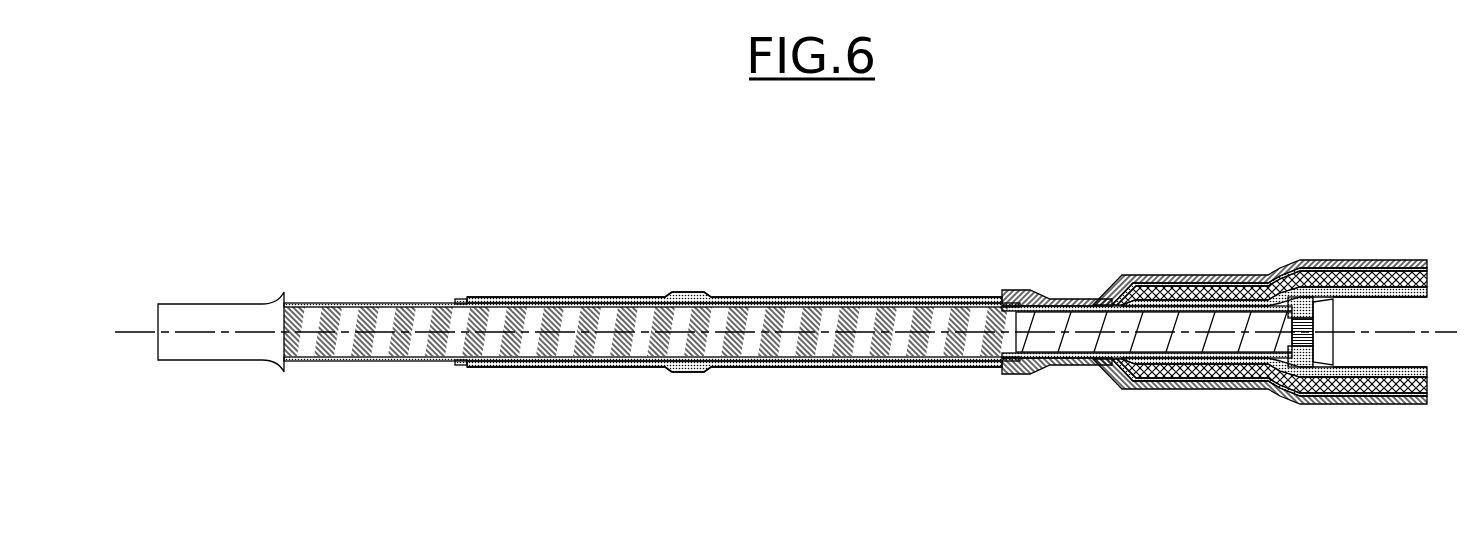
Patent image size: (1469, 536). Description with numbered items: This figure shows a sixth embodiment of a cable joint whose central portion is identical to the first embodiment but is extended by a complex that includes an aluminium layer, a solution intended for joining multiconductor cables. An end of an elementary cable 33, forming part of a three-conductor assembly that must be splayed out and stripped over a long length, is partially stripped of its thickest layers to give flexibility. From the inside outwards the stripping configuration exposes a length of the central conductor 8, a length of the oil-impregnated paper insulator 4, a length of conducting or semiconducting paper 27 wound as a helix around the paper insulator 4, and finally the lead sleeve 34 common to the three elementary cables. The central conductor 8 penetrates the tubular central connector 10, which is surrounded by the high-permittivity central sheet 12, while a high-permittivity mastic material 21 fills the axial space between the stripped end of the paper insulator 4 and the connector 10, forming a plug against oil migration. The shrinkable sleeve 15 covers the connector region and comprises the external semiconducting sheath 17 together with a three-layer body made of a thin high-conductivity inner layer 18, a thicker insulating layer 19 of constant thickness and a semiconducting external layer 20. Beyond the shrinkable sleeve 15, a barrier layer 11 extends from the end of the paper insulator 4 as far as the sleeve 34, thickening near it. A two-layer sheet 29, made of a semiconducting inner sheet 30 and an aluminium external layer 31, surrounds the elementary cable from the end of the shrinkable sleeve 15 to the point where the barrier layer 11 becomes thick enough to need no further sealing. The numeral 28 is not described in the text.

The paper insulator 4 is at (1215, 343).
The central conductor 8 is at (1302, 406).
The central connector 10 is at (1370, 358).
The barrier layer 11 is at (648, 313).
The central sheet 12 is at (1265, 321).
The shrinkable sleeve 15 is at (1265, 304).
The external semiconducting sheath 17 is at (1013, 290).
The innermost layer of high conductivity 18 is at (1357, 261).
The insulating central layer 19 is at (1400, 261).
The semiconducting external layer 20 is at (1422, 261).
The high-permittivity mastic material 21 is at (1302, 258).
The conducting or semiconducting paper 27 is at (903, 363).
The braided tube 28 is at (360, 304).
The two-layer sheet 29 is at (505, 295).
The semiconducting inner sheet 30 is at (460, 299).
The aluminium external layer 31 is at (547, 297).
The elementary cable 33 is at (221, 279).
The sleeve 34 is at (207, 350).